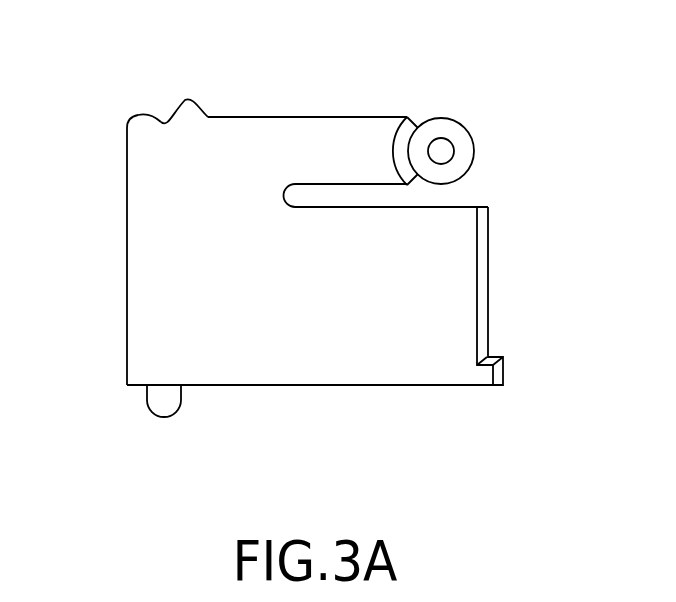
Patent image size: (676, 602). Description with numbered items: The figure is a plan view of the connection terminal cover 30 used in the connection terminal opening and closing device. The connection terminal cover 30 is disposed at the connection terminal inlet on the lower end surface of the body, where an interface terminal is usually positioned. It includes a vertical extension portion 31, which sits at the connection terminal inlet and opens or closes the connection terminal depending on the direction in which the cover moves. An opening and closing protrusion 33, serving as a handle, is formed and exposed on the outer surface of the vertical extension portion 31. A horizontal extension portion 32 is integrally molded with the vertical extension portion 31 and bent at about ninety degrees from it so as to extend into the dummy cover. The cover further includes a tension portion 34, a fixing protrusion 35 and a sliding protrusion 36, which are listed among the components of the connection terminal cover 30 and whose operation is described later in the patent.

The connection terminal cover 30 is at (546, 235).
The vertical extension portion 31 is at (337, 372).
The horizontal extension portion 32 is at (165, 225).
The opening and closing protrusion 33 is at (162, 400).
The tension portion 34 is at (323, 133).
The fixing protrusion 35 is at (441, 151).
The sliding protrusion 36 is at (185, 100).